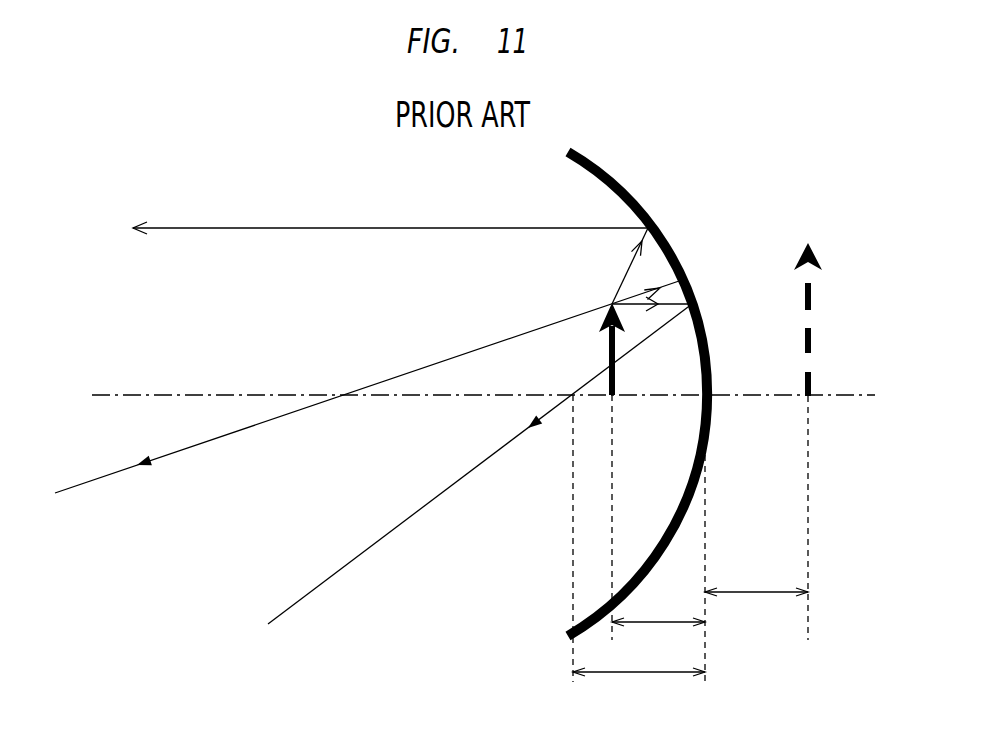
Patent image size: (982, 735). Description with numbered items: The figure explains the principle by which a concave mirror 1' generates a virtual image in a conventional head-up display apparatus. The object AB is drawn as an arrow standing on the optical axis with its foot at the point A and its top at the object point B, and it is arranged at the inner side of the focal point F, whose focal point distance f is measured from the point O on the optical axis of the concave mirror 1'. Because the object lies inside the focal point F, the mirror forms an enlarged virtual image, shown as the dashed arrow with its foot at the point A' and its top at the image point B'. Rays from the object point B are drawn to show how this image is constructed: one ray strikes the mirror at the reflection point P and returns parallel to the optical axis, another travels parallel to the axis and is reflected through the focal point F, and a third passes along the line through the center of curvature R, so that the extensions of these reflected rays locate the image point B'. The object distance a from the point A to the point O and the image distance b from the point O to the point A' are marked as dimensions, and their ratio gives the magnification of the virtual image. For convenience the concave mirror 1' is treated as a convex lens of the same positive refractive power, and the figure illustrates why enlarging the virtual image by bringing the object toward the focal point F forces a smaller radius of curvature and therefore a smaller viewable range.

The concave mirror 1' is at (637, 383).
The object point B is at (601, 329).
The virtual image point B' is at (815, 295).
The focal point F is at (480, 493).
The object foot point A is at (626, 517).
The point on optical axis O is at (725, 541).
The image foot point A' is at (834, 518).
The reflection point P is at (410, 249).
The center of curvature R is at (368, 386).
The object distance a is at (658, 604).
The image distance b is at (756, 572).
The focal point distance f is at (639, 652).